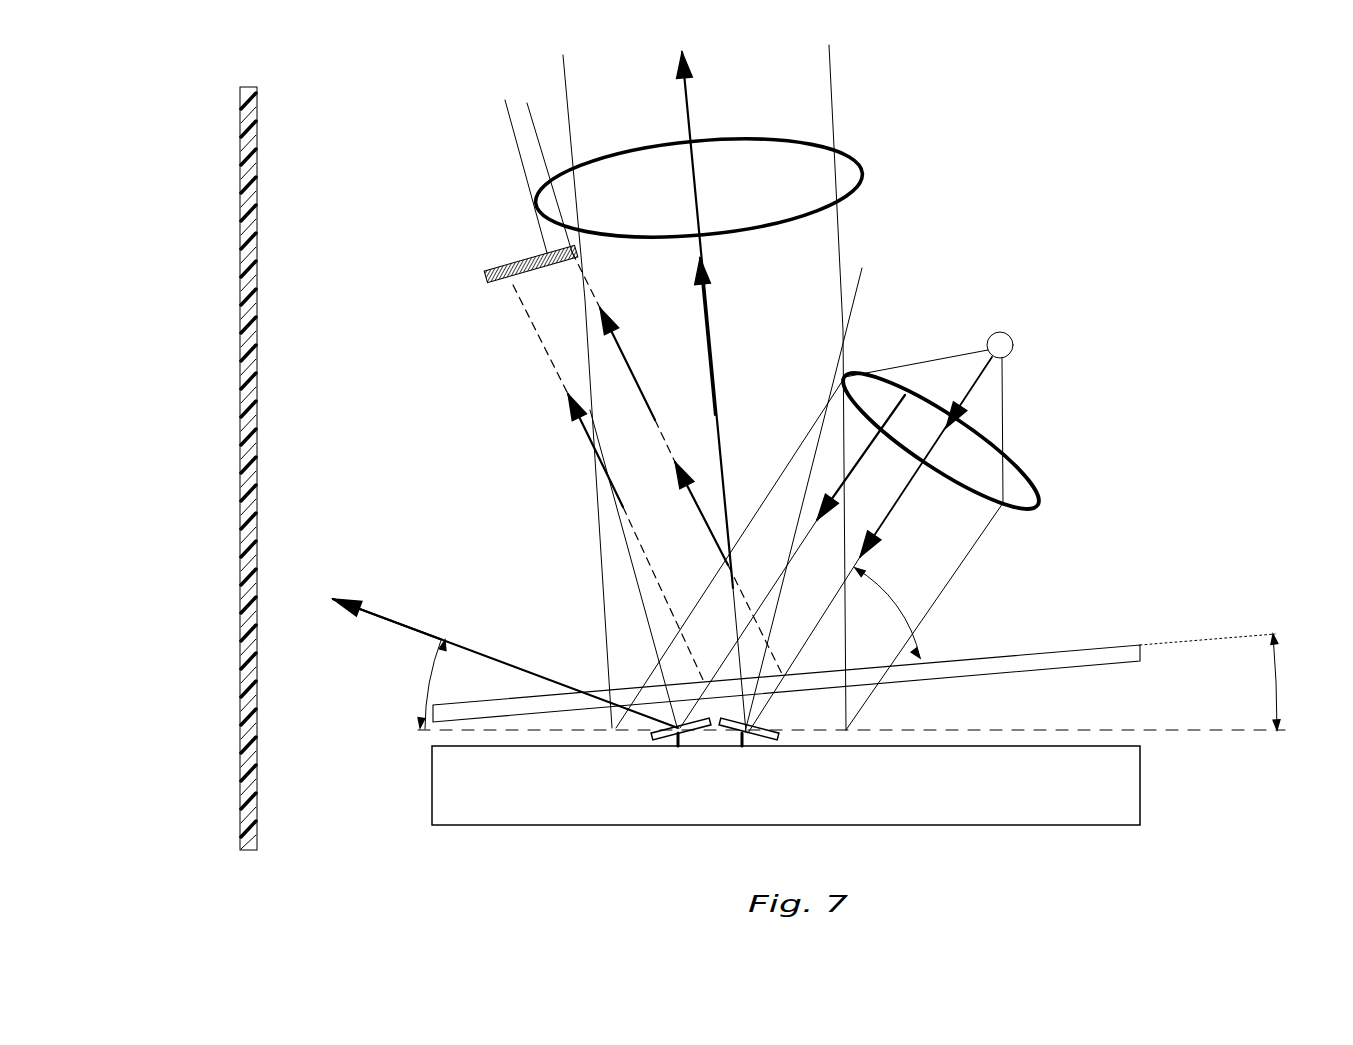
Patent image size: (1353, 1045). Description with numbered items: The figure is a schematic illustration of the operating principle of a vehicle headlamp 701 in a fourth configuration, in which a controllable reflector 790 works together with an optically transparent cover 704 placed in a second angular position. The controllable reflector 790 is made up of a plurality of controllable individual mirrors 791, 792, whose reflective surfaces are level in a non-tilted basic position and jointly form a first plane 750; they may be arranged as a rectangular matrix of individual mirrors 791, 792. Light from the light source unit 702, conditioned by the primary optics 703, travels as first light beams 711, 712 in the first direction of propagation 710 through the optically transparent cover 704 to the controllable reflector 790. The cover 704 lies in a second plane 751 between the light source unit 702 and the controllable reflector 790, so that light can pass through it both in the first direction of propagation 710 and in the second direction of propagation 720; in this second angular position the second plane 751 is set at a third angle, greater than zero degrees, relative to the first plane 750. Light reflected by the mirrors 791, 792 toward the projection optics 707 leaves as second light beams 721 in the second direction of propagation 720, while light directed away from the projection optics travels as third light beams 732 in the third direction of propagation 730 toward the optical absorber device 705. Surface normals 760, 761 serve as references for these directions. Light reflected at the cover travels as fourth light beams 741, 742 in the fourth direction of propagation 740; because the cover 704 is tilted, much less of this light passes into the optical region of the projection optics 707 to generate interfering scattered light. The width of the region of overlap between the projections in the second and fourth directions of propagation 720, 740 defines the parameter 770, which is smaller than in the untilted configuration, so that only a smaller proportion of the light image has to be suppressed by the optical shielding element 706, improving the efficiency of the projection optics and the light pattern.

The vehicle headlamp 701 is at (958, 247).
The light source unit 702 is at (1010, 338).
The primary optics 703 is at (1000, 465).
The optically transparent cover 704 is at (433, 707).
The optical absorber device 705 is at (238, 264).
The optical shielding element 706 is at (490, 268).
The projection optics 707 is at (783, 163).
The first direction of propagation 710 is at (965, 415).
The first light beam 711 is at (870, 545).
The first light beam 712 is at (792, 561).
The second direction of propagation 720 is at (712, 391).
The second light beam 721 is at (733, 335).
The third direction of propagation 730 is at (505, 634).
The third light beam 732 is at (386, 605).
The fourth direction of propagation 740 is at (701, 569).
The fourth light beam 741 is at (623, 357).
The fourth light beam 742 is at (609, 484).
The first plane 750 is at (876, 732).
The second plane 751 is at (880, 671).
The surface normal 760 is at (823, 388).
The surface normal 761 is at (615, 648).
The parameter for overlap 770 is at (567, 100).
The controllable reflector 790 is at (447, 810).
The controllable individual mirror 791 is at (773, 738).
The controllable individual mirror 792 is at (655, 748).